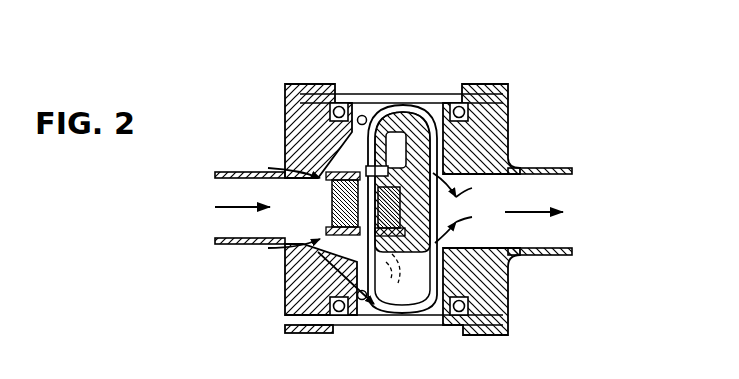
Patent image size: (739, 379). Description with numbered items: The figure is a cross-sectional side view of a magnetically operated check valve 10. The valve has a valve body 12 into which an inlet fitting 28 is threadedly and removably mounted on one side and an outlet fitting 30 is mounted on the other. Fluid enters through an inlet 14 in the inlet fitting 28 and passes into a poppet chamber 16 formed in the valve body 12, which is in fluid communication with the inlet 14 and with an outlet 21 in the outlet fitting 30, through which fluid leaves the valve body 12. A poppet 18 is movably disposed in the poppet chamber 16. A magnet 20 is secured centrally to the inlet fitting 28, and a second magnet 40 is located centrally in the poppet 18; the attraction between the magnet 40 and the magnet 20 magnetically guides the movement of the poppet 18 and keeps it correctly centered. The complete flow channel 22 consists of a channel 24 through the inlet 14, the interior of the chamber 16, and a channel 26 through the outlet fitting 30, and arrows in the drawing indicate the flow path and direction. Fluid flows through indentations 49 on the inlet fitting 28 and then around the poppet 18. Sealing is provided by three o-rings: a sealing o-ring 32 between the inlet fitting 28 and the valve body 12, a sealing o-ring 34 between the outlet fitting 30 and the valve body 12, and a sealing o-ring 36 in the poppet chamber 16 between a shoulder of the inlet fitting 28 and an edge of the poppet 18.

The magnetically operated check valve 10 is at (389, 193).
The valve body 12 is at (385, 222).
The inlet 14 is at (237, 237).
The poppet chamber 16 is at (424, 180).
The poppet 18 is at (443, 156).
The magnet 20 is at (280, 243).
The outlet 21 is at (560, 238).
The flow channel 22 is at (385, 110).
The channel 24 is at (235, 185).
The channel 26 is at (545, 184).
The inlet fitting 28 is at (281, 288).
The outlet fitting 30 is at (504, 129).
The sealing o-ring 32 is at (355, 314).
The sealing o-ring 34 is at (446, 315).
The sealing o-ring 36 is at (357, 103).
The magnet 40 is at (427, 222).
The indentations 49 is at (372, 135).